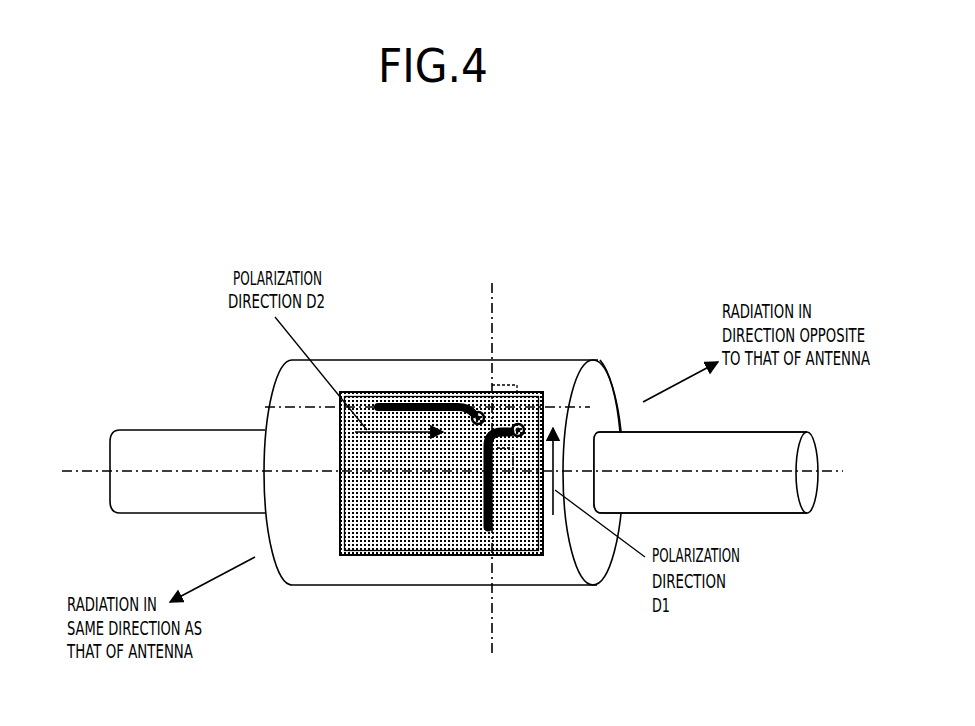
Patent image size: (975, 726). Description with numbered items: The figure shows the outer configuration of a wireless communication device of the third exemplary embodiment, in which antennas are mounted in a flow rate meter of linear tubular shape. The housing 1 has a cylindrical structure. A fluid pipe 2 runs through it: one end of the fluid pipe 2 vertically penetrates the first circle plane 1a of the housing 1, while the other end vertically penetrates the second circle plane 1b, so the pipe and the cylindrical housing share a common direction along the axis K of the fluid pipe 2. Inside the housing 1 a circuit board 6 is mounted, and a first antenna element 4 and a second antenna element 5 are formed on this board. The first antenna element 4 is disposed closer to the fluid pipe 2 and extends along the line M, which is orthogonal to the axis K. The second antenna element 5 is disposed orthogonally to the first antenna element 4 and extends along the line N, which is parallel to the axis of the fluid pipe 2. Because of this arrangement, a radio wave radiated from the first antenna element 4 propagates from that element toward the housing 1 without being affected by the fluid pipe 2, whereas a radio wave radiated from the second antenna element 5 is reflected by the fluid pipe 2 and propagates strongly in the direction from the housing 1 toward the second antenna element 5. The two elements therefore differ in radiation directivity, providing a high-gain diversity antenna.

The housing 1 is at (553, 373).
The first circle plane 1a is at (600, 397).
The second circle plane 1b is at (268, 538).
The fluid pipe 2 is at (777, 497).
The first antenna element 4 is at (482, 497).
The second antenna element 5 is at (405, 395).
The circuit board 6 is at (358, 530).
The line N is at (290, 406).
The axis K is at (715, 470).
The line M is at (493, 613).